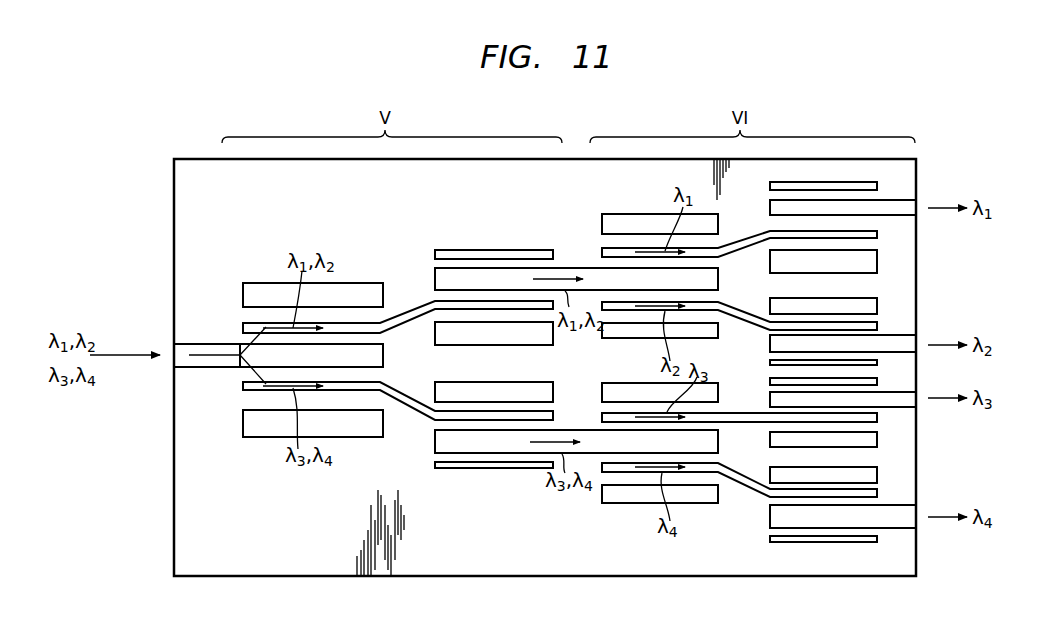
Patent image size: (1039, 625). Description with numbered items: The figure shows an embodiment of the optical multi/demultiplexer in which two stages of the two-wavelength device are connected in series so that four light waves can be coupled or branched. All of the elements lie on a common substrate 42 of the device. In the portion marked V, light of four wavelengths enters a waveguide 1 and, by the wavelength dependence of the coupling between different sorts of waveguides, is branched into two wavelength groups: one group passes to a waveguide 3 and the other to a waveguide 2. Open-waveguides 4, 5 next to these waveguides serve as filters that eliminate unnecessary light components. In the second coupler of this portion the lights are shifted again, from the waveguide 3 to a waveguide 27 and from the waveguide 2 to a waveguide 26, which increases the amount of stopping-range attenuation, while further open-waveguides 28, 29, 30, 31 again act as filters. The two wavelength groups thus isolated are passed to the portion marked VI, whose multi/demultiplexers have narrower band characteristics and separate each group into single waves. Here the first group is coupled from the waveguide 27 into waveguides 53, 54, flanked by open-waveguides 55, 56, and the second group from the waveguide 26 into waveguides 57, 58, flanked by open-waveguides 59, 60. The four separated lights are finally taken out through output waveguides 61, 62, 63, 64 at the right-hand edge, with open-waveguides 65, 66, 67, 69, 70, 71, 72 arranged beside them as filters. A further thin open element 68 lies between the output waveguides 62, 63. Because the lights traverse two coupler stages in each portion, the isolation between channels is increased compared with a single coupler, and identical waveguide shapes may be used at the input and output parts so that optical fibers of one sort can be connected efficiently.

The waveguide 1 is at (383, 355).
The waveguide 2 is at (402, 398).
The waveguide 3 is at (402, 317).
The open-waveguide 4 is at (366, 296).
The open-waveguide 5 is at (363, 433).
The waveguide 26 is at (557, 430).
The waveguide 27 is at (556, 268).
The open-waveguide 28 is at (486, 250).
The open-waveguide 29 is at (527, 345).
The open-waveguide 30 is at (460, 382).
The open-waveguide 31 is at (487, 468).
The substrate 42 is at (325, 577).
The waveguide 53 is at (733, 243).
The waveguide 54 is at (727, 303).
The open-waveguide 55 is at (622, 214).
The open-waveguide 56 is at (623, 338).
The waveguide 57 is at (725, 413).
The waveguide 58 is at (725, 463).
The open-waveguide 59 is at (605, 383).
The open-waveguide 60 is at (625, 503).
The waveguide 61 is at (883, 203).
The waveguide 62 is at (878, 340).
The waveguide 63 is at (890, 407).
The waveguide 64 is at (770, 519).
The open-waveguide 65 is at (808, 185).
The open-waveguide 66 is at (878, 260).
The open-waveguide 67 is at (855, 298).
The electrode 68 is at (868, 363).
The open-waveguide 69 is at (795, 378).
The open-waveguide 70 is at (853, 445).
The open-waveguide 71 is at (873, 476).
The open-waveguide 72 is at (813, 542).